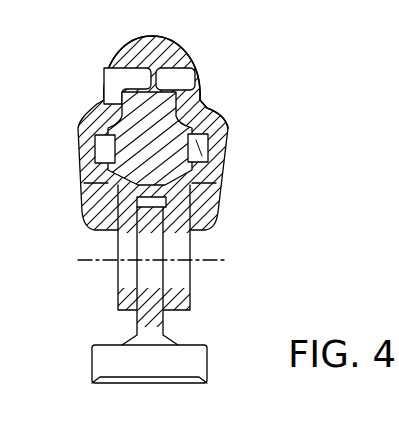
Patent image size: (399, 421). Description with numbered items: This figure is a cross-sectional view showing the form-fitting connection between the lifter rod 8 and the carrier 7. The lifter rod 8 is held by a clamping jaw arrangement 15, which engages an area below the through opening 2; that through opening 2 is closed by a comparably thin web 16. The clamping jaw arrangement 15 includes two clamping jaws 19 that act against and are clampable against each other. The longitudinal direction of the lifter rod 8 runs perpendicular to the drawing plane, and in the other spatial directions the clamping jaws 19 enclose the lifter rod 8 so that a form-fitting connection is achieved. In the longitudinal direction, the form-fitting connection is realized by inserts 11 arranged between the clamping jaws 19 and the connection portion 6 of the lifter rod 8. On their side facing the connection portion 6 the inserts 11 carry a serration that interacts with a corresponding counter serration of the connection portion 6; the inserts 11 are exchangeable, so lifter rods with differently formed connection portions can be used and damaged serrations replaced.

The through opening 2 is at (122, 72).
The connection portion 6 is at (192, 104).
The carrier 7 is at (187, 290).
The lifter rod 8 is at (182, 108).
The inserts 11 is at (95, 157).
The clamping jaw arrangement 15 is at (268, 90).
The web 16 is at (120, 82).
The clamping jaws 19 is at (84, 139).